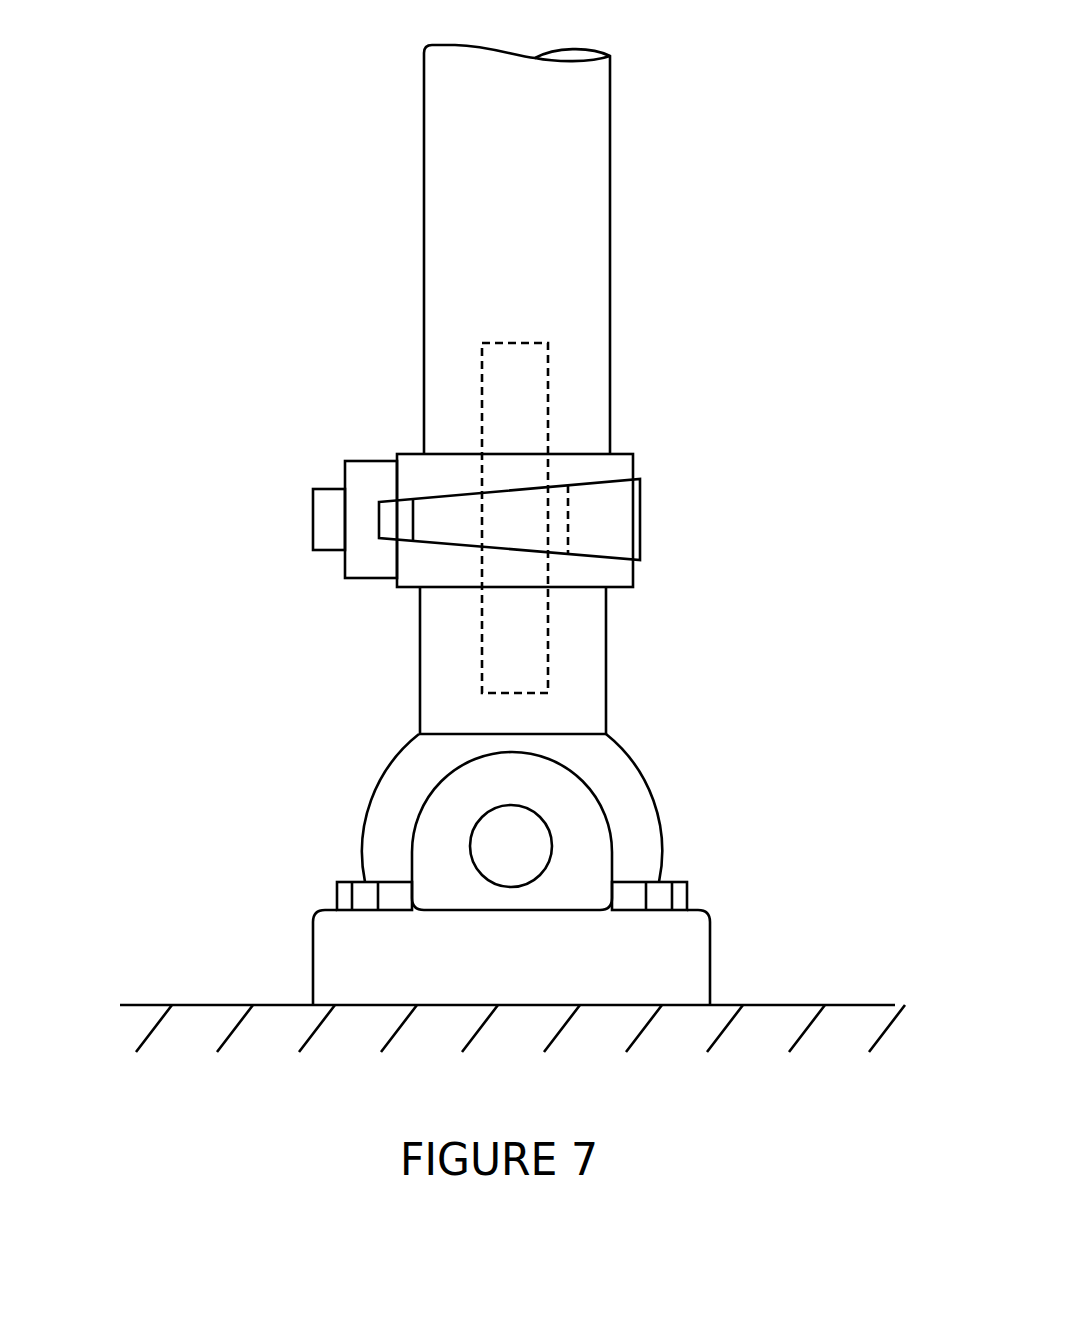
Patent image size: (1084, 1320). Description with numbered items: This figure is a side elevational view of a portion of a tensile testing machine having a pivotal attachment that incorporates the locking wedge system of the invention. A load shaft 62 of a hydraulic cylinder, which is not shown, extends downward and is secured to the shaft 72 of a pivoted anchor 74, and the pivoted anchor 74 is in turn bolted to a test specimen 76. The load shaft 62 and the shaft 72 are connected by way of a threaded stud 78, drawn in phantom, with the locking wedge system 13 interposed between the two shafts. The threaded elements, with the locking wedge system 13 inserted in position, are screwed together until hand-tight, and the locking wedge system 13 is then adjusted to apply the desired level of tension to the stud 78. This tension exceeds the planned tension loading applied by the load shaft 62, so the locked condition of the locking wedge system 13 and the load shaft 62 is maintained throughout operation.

The load shaft 62 is at (449, 257).
The shaft 72 is at (437, 668).
The locking wedge system 13 is at (689, 478).
The threaded stud 78 is at (548, 396).
The pivoted anchor 74 is at (311, 879).
The test specimen 76 is at (202, 1005).